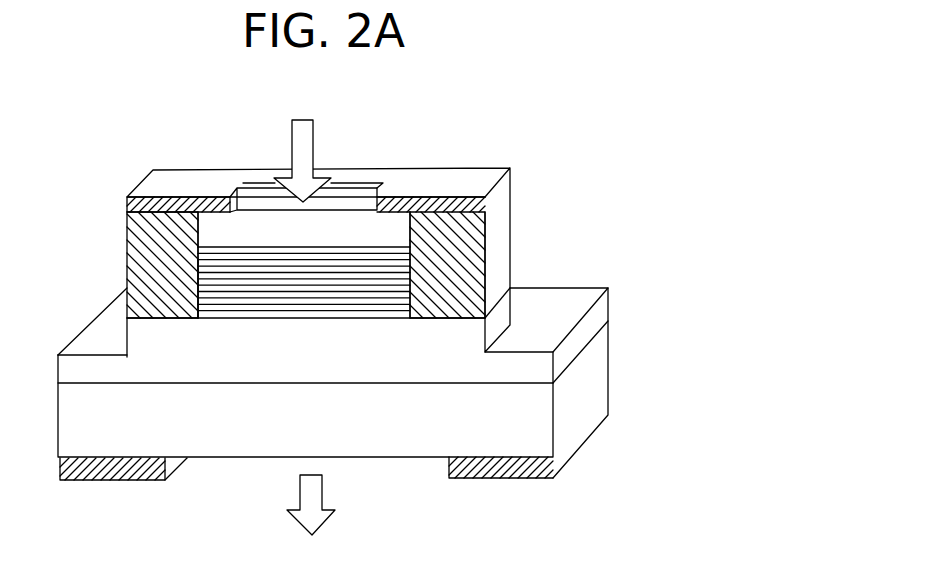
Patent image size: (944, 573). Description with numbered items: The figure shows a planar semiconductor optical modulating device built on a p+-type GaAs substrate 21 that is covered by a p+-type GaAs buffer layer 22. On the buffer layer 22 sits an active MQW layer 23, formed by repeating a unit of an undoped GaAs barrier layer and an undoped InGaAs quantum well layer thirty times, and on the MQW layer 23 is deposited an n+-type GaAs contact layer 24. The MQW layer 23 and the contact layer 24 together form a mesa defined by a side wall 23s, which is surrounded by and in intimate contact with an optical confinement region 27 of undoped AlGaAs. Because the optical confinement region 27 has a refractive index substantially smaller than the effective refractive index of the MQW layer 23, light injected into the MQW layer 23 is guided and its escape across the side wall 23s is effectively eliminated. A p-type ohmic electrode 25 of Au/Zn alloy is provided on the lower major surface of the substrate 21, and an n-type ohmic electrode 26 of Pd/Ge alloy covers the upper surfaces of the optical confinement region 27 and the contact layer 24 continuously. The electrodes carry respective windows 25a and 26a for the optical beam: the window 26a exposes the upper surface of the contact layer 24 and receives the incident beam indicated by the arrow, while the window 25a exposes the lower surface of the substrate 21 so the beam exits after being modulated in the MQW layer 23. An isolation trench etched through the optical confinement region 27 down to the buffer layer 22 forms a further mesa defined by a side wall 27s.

The substrate 21 is at (595, 390).
The buffer layer 22 is at (540, 373).
The MQW layer 23 is at (410, 258).
The side wall 23s is at (193, 296).
The contact layer 24 is at (400, 230).
The p-type ohmic electrode 25 is at (547, 467).
The window 25a is at (440, 463).
The n-type ohmic electrode 26 is at (497, 191).
The window 26a is at (363, 195).
The optical confinement region 27 is at (473, 285).
The side wall 27s is at (127, 257).